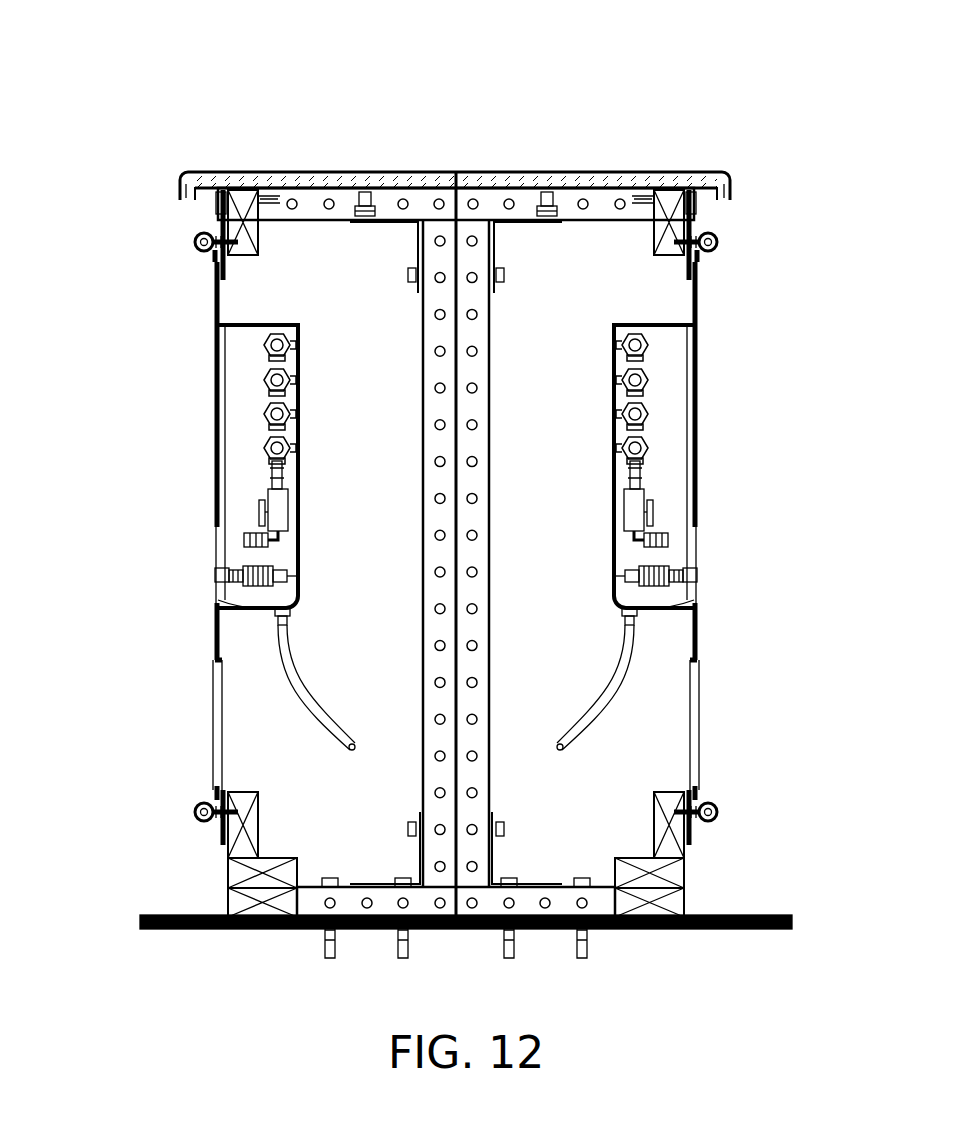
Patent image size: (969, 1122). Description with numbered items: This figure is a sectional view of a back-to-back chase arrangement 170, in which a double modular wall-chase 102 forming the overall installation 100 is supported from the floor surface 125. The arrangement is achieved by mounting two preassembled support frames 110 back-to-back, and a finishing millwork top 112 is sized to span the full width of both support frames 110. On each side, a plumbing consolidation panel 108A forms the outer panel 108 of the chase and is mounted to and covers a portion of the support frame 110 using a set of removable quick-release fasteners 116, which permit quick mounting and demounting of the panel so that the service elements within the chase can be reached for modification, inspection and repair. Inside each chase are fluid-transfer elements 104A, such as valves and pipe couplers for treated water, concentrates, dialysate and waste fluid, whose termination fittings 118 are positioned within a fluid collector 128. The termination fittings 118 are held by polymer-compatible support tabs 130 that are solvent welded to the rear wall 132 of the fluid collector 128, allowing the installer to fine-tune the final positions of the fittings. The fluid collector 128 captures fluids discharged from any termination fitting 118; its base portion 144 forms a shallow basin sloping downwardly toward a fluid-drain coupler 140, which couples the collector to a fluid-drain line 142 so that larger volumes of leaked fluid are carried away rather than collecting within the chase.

The system 100 is at (468, 105).
The double modular wall-chase 102 is at (540, 125).
The fluid-transfer elements 104A is at (265, 378).
The housing side wall 108 is at (185, 742).
The plumbing consolidation panel 108A is at (185, 690).
The support frame 110 is at (472, 318).
The finishing millwork top 112 is at (682, 173).
The quick-release fasteners 116 is at (185, 240).
The termination fittings 118 is at (265, 448).
The floor surface 125 is at (727, 929).
The fluid collector 128 is at (215, 587).
The support tabs 130 is at (623, 380).
The rear wall 132 is at (613, 490).
The fluid-drain coupler 140 is at (625, 622).
The fluid-drain line 142 is at (590, 737).
The base portion 144 is at (672, 612).
The back-to-back chase arrangement 170 is at (298, 128).